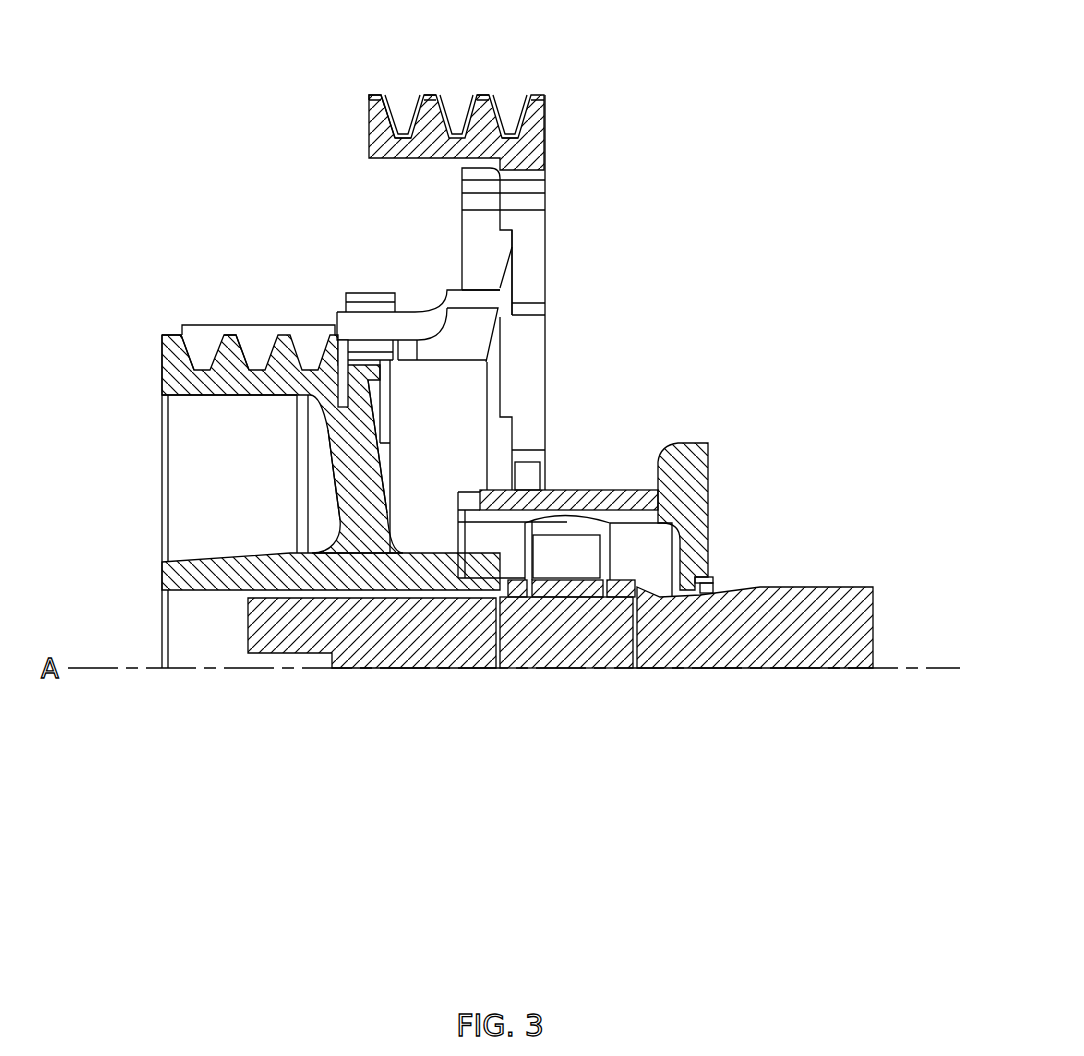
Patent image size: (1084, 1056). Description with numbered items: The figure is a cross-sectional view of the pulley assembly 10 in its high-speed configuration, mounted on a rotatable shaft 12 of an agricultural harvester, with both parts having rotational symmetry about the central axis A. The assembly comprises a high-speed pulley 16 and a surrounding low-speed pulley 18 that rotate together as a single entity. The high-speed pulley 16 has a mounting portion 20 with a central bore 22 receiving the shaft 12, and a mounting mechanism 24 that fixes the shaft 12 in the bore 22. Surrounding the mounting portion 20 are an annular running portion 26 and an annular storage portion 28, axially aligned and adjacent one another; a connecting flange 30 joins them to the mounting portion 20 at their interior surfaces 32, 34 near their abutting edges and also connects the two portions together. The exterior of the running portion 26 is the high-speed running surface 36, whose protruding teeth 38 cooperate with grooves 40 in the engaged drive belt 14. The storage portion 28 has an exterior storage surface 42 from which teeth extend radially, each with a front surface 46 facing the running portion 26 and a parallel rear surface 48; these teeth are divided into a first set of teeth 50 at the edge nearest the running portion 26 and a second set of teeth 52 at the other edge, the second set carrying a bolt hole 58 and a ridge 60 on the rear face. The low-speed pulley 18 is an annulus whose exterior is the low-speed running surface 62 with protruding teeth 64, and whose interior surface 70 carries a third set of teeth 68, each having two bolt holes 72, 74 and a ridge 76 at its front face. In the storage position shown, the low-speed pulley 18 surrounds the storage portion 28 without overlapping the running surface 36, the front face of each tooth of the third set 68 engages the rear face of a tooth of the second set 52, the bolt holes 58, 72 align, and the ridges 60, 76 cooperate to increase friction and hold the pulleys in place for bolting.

The pulley assembly 10 is at (795, 158).
The shaft 12 is at (738, 665).
The drive belt 14 is at (258, 337).
The high-speed pulley 16 is at (160, 378).
The low-speed pulley 18 is at (549, 105).
The mounting portion 20 is at (160, 568).
The central bore 22 is at (218, 648).
The mounting mechanism 24 is at (710, 470).
The running portion 26 is at (185, 410).
The storage portion 28 is at (527, 355).
The connecting flange 30 is at (372, 448).
The interior surface 32 is at (255, 396).
The interior surface 34 is at (445, 362).
The high-speed running surface 36 is at (208, 340).
The protruding teeth 38 is at (282, 337).
The grooves 40 is at (232, 338).
The storage surface 42 is at (530, 258).
The front surface 46 is at (437, 191).
The rear surface 48 is at (513, 278).
The first set of teeth 50 is at (358, 297).
The second set of teeth 52 is at (503, 107).
The bolt hole 58 is at (462, 213).
The ridge 60 is at (545, 180).
The low-speed running surface 62 is at (407, 110).
The protruding teeth 64 is at (483, 97).
The third set of teeth 68 is at (545, 313).
The interior surface 70 is at (372, 100).
The bolt hole 72 is at (545, 280).
The bolt hole 74 is at (487, 185).
The ridge 76 is at (522, 195).